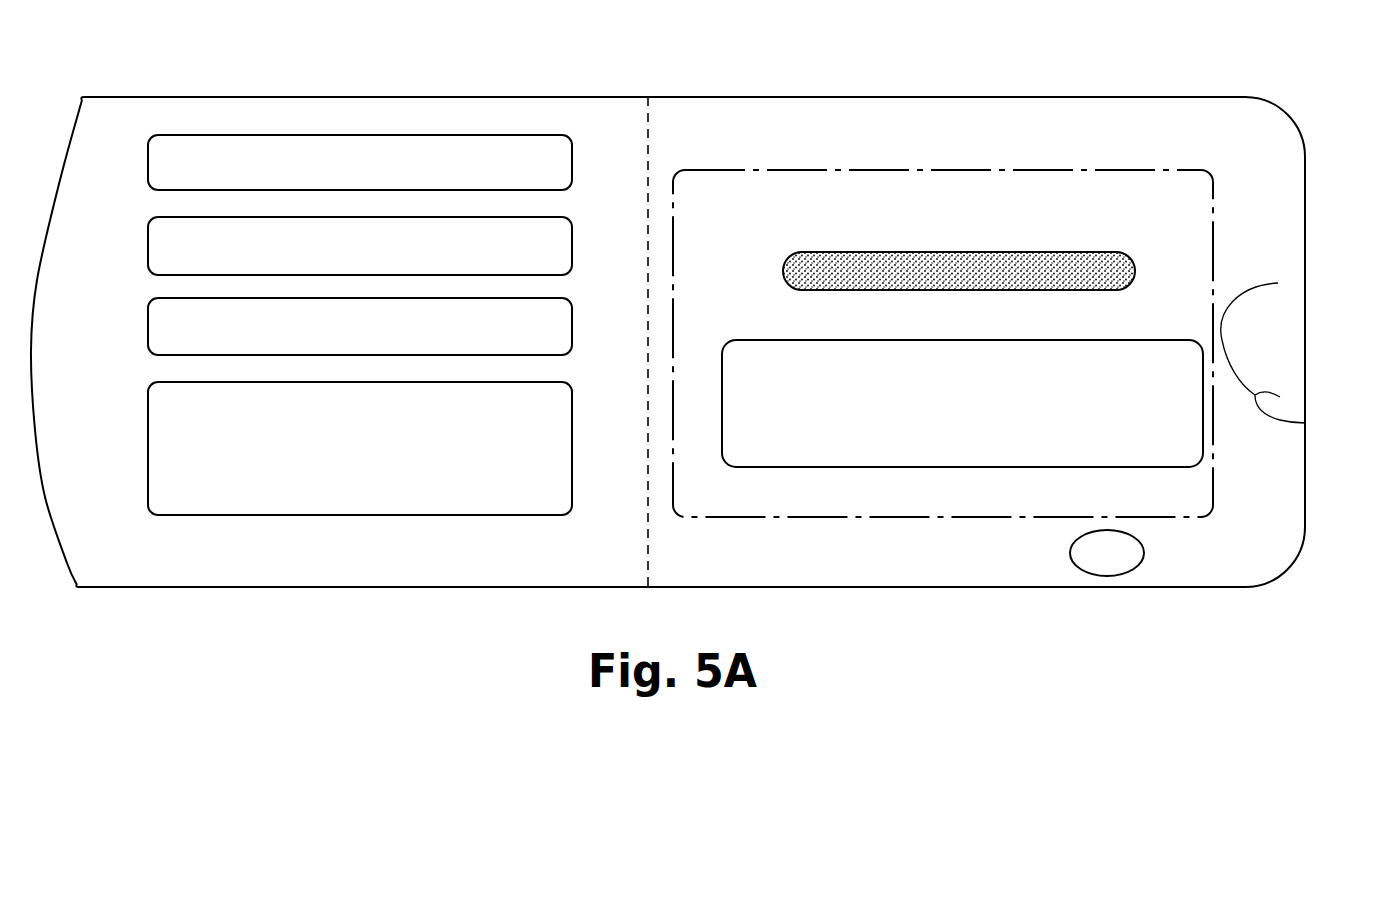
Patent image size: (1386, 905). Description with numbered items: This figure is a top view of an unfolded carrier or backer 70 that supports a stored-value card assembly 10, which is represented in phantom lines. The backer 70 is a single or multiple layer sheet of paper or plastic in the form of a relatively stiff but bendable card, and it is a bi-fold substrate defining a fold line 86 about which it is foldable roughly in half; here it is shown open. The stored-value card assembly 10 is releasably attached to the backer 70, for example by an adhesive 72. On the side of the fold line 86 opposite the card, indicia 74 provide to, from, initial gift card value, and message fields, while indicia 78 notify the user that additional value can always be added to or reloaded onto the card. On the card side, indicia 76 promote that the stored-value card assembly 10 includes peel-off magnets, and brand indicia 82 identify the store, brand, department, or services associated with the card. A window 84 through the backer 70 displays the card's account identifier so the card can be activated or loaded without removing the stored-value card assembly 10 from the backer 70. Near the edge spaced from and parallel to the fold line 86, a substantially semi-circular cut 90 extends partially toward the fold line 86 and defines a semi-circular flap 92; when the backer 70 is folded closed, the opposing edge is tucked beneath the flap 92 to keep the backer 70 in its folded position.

The backer 70 is at (1097, 54).
The stored-value card assembly 10 is at (1193, 208).
The adhesive 72 is at (1137, 271).
The indicia 74 is at (383, 135).
The indicia 76 is at (1152, 136).
The indicia 78 is at (205, 565).
The brand indicia 82 is at (1078, 568).
The window 84 is at (1200, 436).
The fold line 86 is at (652, 121).
The semi-circular cut 90 is at (1305, 423).
The semi-circular flap 92 is at (1235, 342).